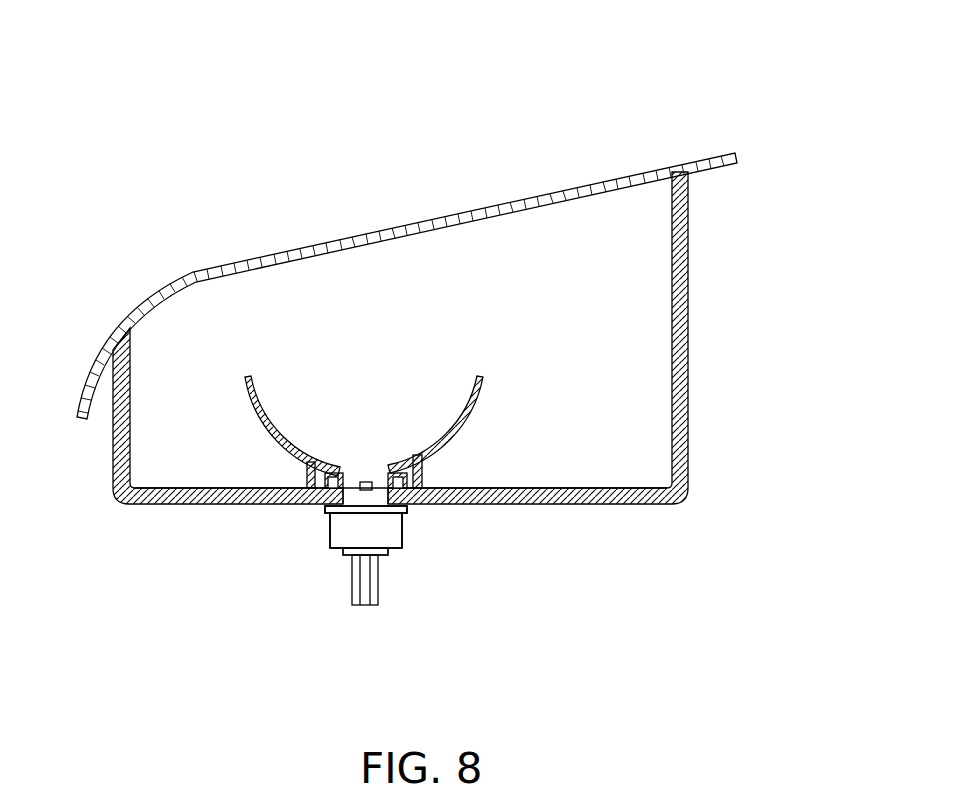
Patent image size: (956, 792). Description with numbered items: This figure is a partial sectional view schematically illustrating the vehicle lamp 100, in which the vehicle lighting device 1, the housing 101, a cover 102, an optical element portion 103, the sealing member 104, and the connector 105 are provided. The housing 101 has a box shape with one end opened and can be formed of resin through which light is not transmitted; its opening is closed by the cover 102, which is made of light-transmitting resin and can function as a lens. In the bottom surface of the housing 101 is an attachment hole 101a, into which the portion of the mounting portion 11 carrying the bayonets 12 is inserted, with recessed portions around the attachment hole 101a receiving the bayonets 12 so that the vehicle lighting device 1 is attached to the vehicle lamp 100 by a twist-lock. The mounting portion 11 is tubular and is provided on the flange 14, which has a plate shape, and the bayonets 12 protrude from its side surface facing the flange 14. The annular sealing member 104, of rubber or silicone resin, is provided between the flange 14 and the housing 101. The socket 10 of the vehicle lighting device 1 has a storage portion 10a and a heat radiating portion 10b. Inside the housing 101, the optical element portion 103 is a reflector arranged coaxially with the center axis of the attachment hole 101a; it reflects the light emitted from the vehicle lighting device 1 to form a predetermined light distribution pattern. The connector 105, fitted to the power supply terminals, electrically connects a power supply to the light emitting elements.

The vehicle lamp 100 is at (766, 119).
The housing 101 is at (688, 393).
The attachment hole 101a is at (363, 506).
The cover 102 is at (277, 252).
The optical element portion 103 is at (268, 423).
The sealing member 104 is at (340, 505).
The connector 105 is at (386, 555).
The vehicle lighting device 1 is at (334, 563).
The socket 10 is at (594, 553).
The storage portion 10a is at (387, 459).
The heat radiating portion 10b is at (409, 523).
The mounting portion 11 is at (378, 481).
The bayonet 12 is at (337, 485).
The flange 14 is at (339, 505).